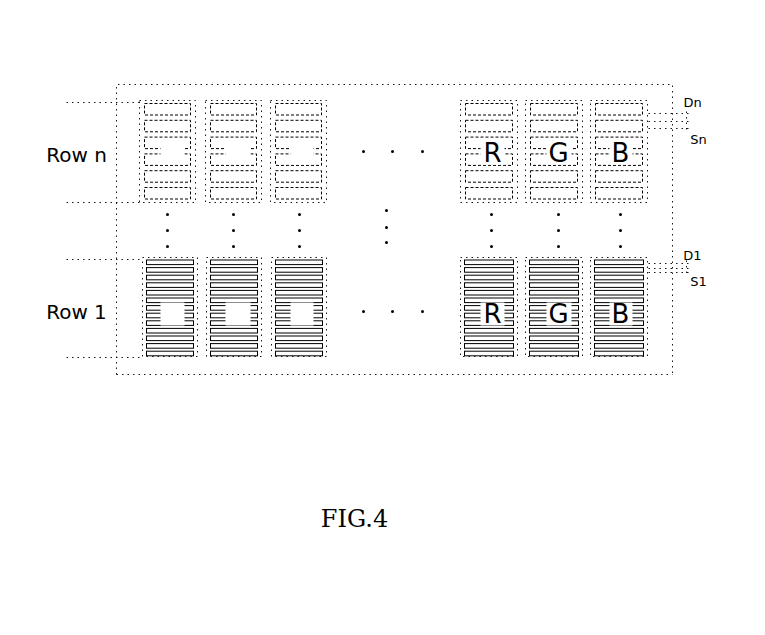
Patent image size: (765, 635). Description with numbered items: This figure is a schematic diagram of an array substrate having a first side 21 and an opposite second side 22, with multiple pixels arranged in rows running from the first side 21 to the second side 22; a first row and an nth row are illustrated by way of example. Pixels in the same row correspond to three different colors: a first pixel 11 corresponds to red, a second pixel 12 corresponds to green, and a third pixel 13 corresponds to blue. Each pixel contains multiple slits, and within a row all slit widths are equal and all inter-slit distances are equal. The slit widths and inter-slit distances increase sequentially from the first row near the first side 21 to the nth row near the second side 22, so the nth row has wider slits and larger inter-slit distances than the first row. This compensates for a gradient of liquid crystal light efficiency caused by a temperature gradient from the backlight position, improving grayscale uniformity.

The first pixel 11 is at (168, 356).
The second pixel 12 is at (232, 356).
The third pixel 13 is at (298, 356).
The first side 21 is at (384, 374).
The second side 22 is at (399, 84).